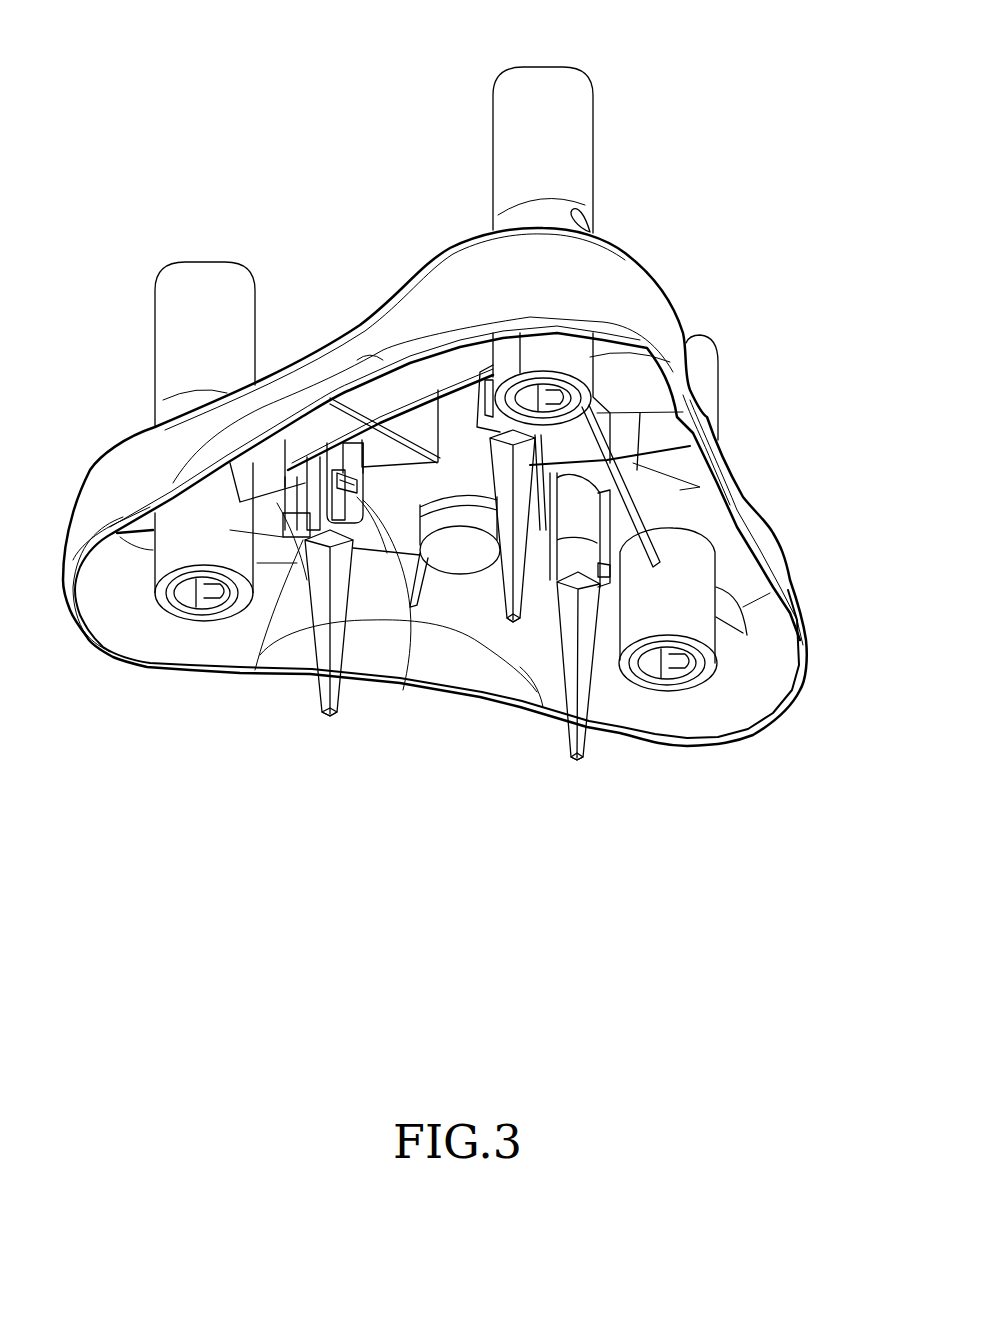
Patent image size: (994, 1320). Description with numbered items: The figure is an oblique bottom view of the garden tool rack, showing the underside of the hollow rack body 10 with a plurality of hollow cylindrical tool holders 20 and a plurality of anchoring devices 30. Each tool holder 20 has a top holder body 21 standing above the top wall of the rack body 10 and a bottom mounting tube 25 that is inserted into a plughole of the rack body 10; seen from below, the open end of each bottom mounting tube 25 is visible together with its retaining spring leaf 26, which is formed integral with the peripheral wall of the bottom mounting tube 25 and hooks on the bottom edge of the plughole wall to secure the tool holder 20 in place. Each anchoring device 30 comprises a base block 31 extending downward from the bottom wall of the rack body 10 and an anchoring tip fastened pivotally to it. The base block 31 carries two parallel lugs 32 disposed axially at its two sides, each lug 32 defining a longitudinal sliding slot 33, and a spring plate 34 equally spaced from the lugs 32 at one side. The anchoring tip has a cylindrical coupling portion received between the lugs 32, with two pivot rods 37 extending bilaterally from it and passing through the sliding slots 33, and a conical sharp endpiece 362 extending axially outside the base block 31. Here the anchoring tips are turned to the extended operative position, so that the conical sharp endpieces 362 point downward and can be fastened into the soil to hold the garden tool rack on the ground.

The rack body 10 is at (453, 270).
The tool holder 20 is at (602, 97).
The top holder body 21 is at (592, 137).
The bottom mounting tube 25 is at (548, 385).
The retaining spring leaf 26 is at (530, 392).
The anchoring device 30 is at (330, 732).
The base block 31 is at (597, 510).
The lug 32 is at (346, 453).
The longitudinal sliding slot 33 is at (360, 527).
The spring plate 34 is at (298, 478).
The pivot rod 37 is at (362, 492).
The conical sharp endpiece 362 is at (313, 677).